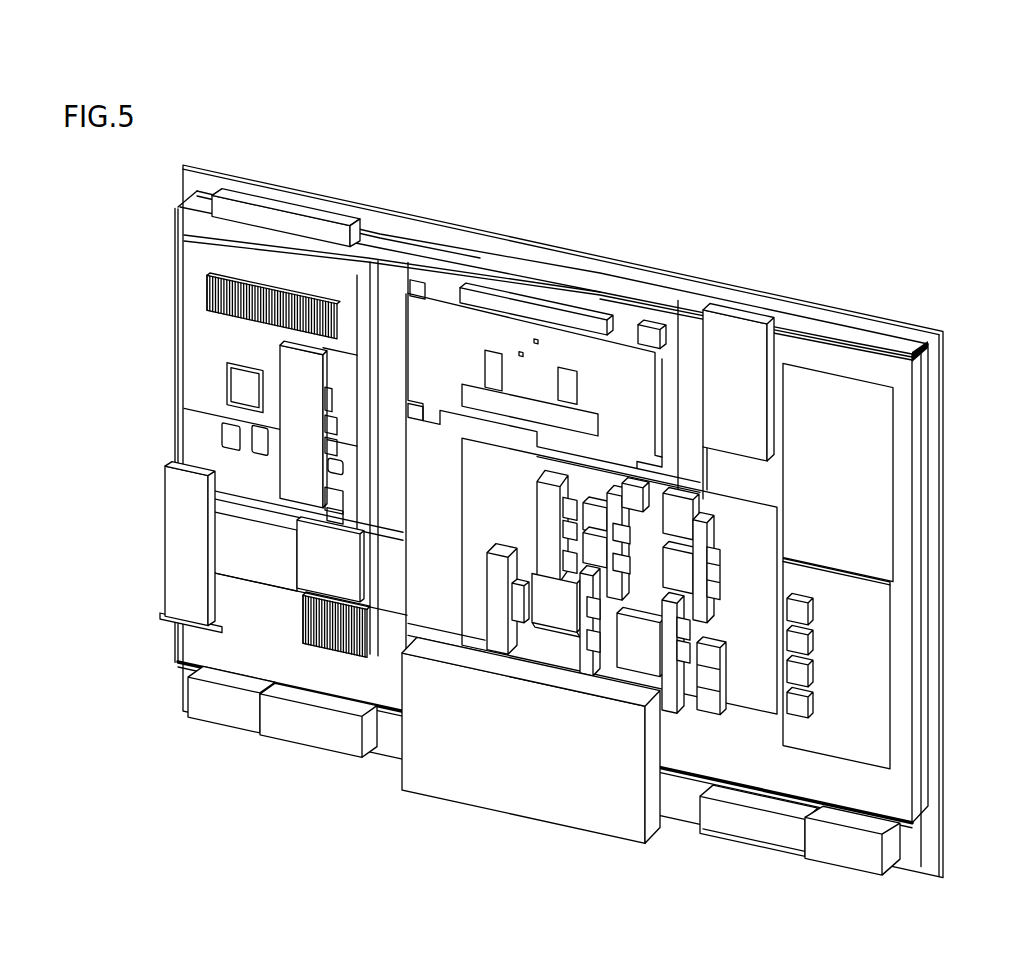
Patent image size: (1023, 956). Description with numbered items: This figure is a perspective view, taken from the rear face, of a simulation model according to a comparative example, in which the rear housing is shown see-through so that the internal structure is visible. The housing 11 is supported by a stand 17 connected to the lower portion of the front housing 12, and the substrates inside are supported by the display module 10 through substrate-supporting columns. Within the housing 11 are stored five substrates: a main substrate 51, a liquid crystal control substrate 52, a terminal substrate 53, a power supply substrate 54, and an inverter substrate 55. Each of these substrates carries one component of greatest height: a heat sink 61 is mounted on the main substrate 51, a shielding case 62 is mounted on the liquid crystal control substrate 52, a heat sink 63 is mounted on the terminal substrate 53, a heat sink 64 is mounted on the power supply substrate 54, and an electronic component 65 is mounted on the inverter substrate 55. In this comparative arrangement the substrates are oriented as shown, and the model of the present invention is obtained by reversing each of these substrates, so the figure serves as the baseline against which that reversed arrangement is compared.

The display module 10 is at (804, 325).
The housing 11 is at (287, 188).
The front housing 12 is at (660, 278).
The stand 17 is at (558, 805).
The main substrate 51 is at (207, 340).
The liquid crystal control substrate 52 is at (545, 372).
The terminal substrate 53 is at (233, 553).
The power supply substrate 54 is at (755, 537).
The inverter substrate 55 is at (860, 478).
The heat sink 61 is at (207, 303).
The shielding case 62 is at (437, 325).
The heat sink 63 is at (338, 645).
The heat sink 64 is at (590, 636).
The electronic component 65 is at (800, 706).